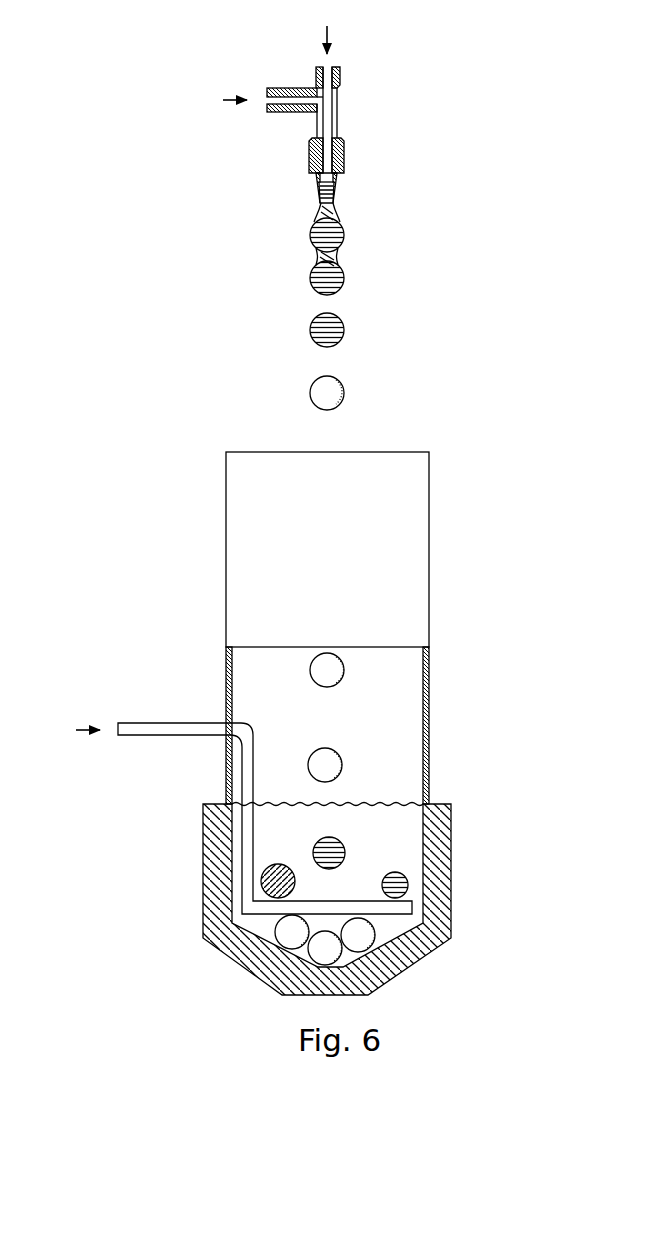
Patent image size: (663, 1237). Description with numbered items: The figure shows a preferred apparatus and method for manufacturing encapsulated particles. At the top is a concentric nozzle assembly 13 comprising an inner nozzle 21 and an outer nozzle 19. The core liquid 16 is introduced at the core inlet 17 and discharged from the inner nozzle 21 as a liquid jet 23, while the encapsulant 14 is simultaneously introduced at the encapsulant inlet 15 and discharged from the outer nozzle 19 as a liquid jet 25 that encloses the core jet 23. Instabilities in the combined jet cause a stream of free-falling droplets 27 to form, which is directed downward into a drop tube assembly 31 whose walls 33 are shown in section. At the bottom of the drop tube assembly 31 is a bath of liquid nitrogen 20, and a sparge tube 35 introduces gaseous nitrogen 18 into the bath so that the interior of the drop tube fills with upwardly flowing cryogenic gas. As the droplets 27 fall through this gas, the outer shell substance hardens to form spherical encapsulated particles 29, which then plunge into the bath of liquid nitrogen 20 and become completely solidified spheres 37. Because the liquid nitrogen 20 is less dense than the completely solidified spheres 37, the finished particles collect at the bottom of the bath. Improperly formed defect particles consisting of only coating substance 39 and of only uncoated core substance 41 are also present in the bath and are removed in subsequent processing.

The concentric nozzle assembly 13 is at (352, 125).
The encapsulant 14 is at (217, 103).
The encapsulant inlet 15 is at (267, 94).
The core liquid 16 is at (331, 27).
The core inlet 17 is at (330, 66).
The gaseous nitrogen 18 is at (70, 731).
The outer nozzle 19 is at (337, 177).
The bath of liquid nitrogen 20 is at (382, 802).
The inner nozzle 21 is at (338, 181).
The liquid jet 23 is at (326, 182).
The liquid jet 25 is at (322, 193).
The free-falling droplets 27 is at (309, 390).
The spherical encapsulated particles 29 is at (340, 760).
The drop tube assembly 31 is at (208, 585).
The vessel wall 33 is at (226, 645).
The sparge tube 35 is at (215, 723).
The completely solidified sphere 37 is at (343, 847).
The particles of only coating substance 39 is at (295, 882).
The uncoated core substance 41 is at (408, 882).